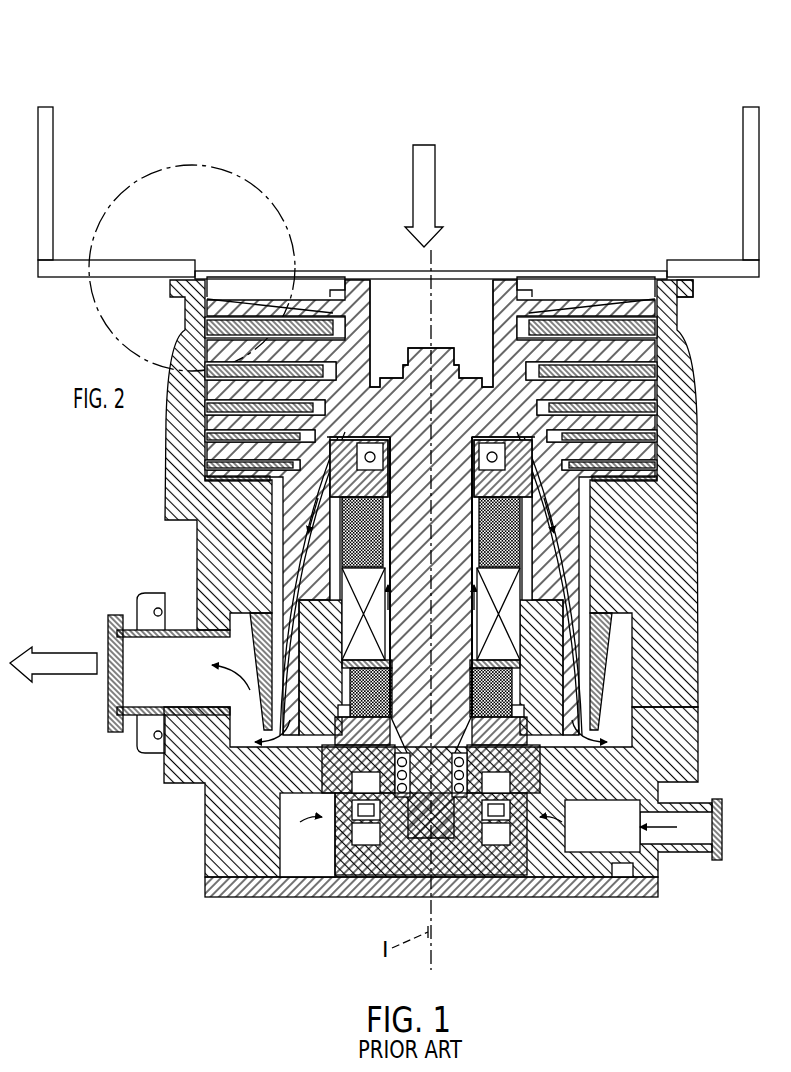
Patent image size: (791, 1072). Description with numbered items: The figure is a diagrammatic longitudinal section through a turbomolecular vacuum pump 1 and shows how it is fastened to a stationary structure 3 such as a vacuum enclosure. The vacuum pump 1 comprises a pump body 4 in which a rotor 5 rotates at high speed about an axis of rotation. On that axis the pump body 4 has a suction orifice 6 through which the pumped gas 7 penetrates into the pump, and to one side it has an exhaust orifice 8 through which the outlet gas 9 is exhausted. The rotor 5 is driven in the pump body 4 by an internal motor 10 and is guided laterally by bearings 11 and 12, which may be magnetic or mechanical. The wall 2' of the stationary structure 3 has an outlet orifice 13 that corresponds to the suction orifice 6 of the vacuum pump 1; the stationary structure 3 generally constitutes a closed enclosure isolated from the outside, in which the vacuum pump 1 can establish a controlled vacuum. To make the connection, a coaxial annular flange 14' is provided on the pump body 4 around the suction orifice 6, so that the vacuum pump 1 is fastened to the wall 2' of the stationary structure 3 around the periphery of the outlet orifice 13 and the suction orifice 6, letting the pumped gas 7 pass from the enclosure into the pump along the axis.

The vacuum pump 1 is at (143, 806).
The wall 2' is at (398, 241).
The stationary structure 3 is at (601, 118).
The pump body 4 is at (183, 507).
The rotor 5 is at (503, 278).
The suction orifice 6 is at (325, 278).
The pumped gas 7 is at (427, 172).
The exhaust orifice 8 is at (133, 670).
The outlet gas 9 is at (53, 658).
The internal motor 10 is at (503, 618).
The bearing 11 is at (497, 472).
The bearing 12 is at (507, 833).
The outlet orifice 13 is at (372, 264).
The coaxial annular flange 14' is at (710, 299).